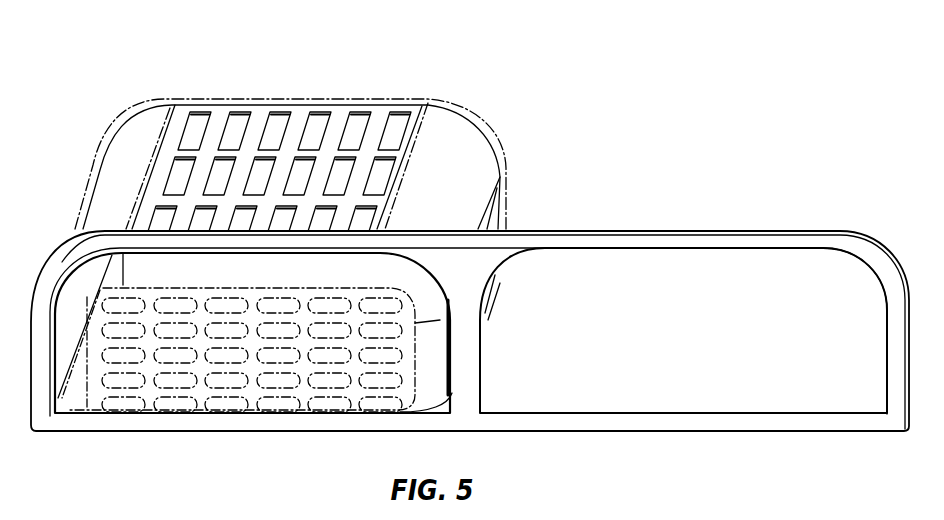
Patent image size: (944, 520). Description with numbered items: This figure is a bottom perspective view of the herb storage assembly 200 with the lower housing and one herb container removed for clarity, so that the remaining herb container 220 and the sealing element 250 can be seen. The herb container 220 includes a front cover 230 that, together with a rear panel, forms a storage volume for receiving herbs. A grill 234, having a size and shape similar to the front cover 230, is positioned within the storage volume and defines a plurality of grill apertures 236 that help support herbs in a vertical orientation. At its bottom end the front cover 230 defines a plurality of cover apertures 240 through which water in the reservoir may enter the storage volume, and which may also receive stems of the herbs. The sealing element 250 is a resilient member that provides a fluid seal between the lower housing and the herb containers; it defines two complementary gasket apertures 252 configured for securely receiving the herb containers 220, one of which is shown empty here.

The herb storage assembly 200 is at (743, 134).
The herb container 220 is at (510, 156).
The front cover 230 is at (463, 110).
The grill 234 is at (255, 118).
The grill apertures 236 is at (397, 123).
The cover apertures 240 is at (229, 352).
The sealing element 250 is at (473, 249).
The gasket apertures 252 is at (693, 287).